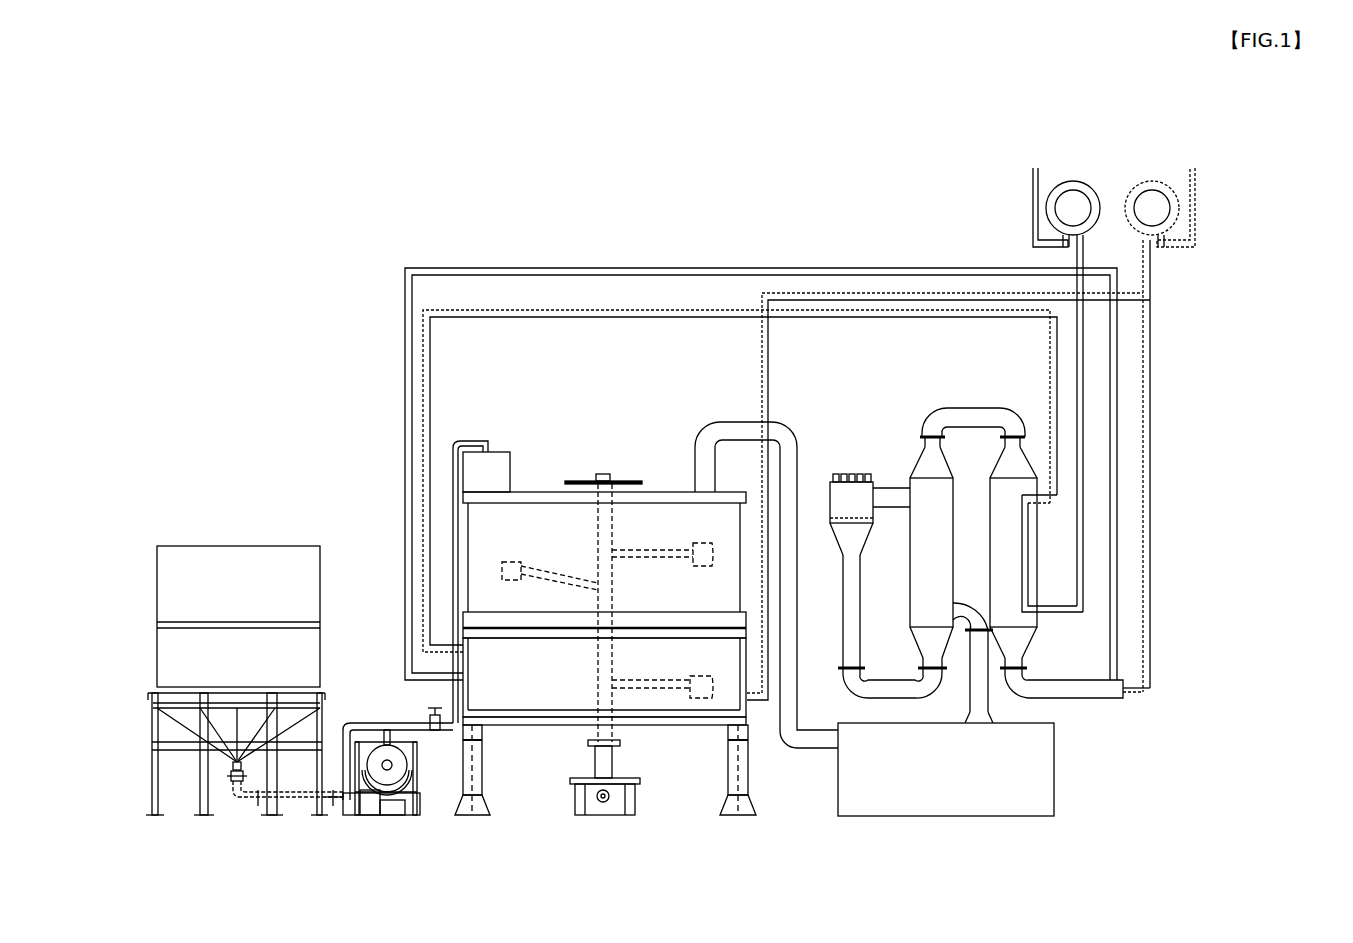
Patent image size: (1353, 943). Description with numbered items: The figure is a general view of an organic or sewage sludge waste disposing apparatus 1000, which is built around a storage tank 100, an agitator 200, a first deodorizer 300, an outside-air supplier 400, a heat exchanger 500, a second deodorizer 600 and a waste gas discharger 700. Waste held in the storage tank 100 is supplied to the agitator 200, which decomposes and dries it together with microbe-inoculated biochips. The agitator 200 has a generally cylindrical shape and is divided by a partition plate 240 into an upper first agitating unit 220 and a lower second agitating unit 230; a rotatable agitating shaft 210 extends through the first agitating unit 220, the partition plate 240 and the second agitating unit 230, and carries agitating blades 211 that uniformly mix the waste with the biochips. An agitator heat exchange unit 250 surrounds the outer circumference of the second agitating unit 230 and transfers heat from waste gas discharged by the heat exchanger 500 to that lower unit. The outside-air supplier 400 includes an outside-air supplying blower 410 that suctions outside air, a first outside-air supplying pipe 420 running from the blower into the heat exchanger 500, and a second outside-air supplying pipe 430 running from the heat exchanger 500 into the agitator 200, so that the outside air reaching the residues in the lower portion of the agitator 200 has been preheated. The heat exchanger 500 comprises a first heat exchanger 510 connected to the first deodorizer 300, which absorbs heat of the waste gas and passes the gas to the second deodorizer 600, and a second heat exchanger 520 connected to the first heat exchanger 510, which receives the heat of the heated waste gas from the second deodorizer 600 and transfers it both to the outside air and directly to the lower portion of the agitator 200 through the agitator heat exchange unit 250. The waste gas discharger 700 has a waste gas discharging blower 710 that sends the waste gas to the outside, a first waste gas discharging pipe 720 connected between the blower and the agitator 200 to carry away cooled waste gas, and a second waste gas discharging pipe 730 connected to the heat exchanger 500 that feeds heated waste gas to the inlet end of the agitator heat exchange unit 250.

The organic or sewage sludge waste disposing apparatus 1000 is at (672, 139).
The storage tank 100 is at (222, 540).
The agitator 200 is at (542, 602).
The rotatable agitating shaft 210 is at (608, 528).
The agitating blades 211 is at (688, 540).
The first agitating unit 220 is at (478, 533).
The second agitating unit 230 is at (482, 667).
The partition plate 240 is at (495, 630).
The agitator heat exchange unit 250 is at (457, 693).
The first deodorizer 300 is at (1072, 792).
The outside-air supplier 400 is at (1002, 176).
The outside-air supplying blower 410 is at (1070, 205).
The first outside-air supplying pipe 420 is at (1085, 366).
The second outside-air supplying pipe 430 is at (640, 312).
The heat exchanger 500 is at (1036, 527).
The first heat exchanger 510 is at (938, 468).
The second heat exchanger 520 is at (1010, 565).
The second deodorizer 600 is at (850, 466).
The waste gas discharger 700 is at (1221, 176).
The waste gas discharging blower 710 is at (1150, 205).
The first waste gas discharging pipe 720 is at (810, 296).
The second waste gas discharging pipe 730 is at (403, 271).